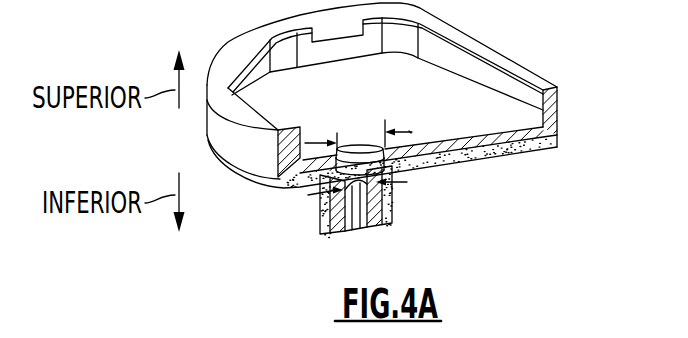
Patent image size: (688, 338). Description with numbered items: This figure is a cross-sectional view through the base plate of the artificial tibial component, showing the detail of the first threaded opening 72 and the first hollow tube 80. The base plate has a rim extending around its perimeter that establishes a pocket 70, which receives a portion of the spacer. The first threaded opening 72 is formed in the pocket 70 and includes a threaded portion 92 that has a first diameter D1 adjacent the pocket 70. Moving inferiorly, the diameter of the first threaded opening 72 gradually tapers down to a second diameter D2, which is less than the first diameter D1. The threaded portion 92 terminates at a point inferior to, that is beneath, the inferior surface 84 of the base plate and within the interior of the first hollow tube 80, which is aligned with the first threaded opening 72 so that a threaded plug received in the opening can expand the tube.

The pocket 70 is at (288, 87).
The first threaded opening 72 is at (362, 126).
The first hollow tube 80 is at (300, 218).
The inferior surface 84 is at (550, 143).
The threaded portion 92 is at (410, 131).
The first diameter D1 is at (408, 130).
The second diameter D2 is at (407, 182).